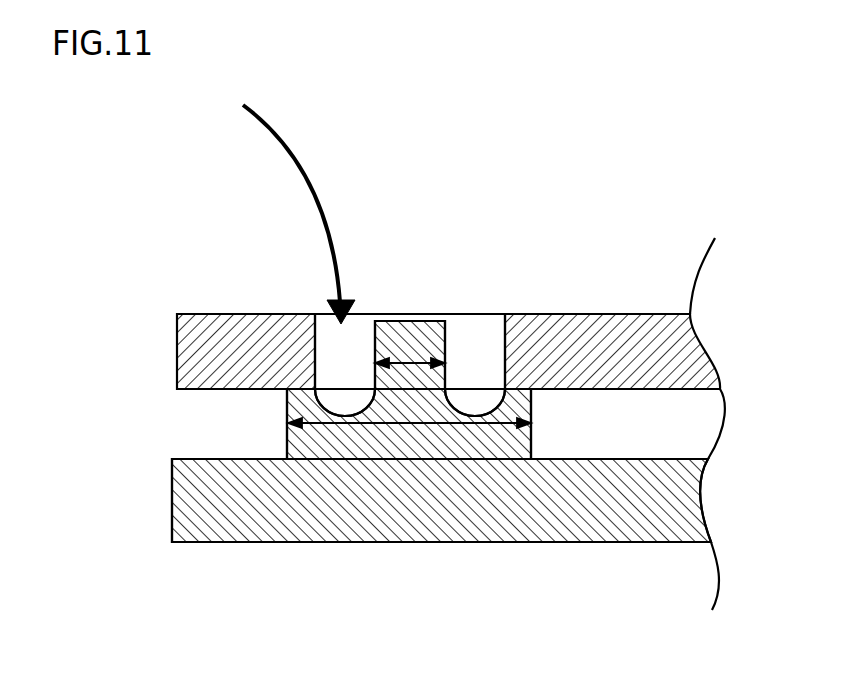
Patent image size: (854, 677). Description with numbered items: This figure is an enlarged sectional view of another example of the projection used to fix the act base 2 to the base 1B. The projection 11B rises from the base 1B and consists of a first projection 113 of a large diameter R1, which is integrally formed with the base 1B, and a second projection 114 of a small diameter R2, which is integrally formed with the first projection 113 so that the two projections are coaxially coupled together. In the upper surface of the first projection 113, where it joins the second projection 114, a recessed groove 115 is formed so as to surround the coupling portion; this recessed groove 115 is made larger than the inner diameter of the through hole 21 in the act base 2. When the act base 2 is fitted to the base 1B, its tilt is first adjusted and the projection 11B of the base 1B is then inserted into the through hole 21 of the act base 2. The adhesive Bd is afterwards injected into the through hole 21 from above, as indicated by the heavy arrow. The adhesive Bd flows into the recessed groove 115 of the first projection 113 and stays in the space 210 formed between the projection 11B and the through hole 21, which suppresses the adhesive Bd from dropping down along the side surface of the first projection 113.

The act base 2 is at (647, 360).
The through hole 21 is at (506, 353).
The space 210 is at (338, 353).
The second projection 114 is at (400, 333).
The recessed groove 115 is at (345, 402).
The projection 11B is at (289, 445).
The first projection 113 is at (362, 443).
The base 1B is at (602, 495).
The large diameter R1 is at (468, 421).
The small diameter R2 is at (434, 322).
The adhesive Bd is at (299, 189).